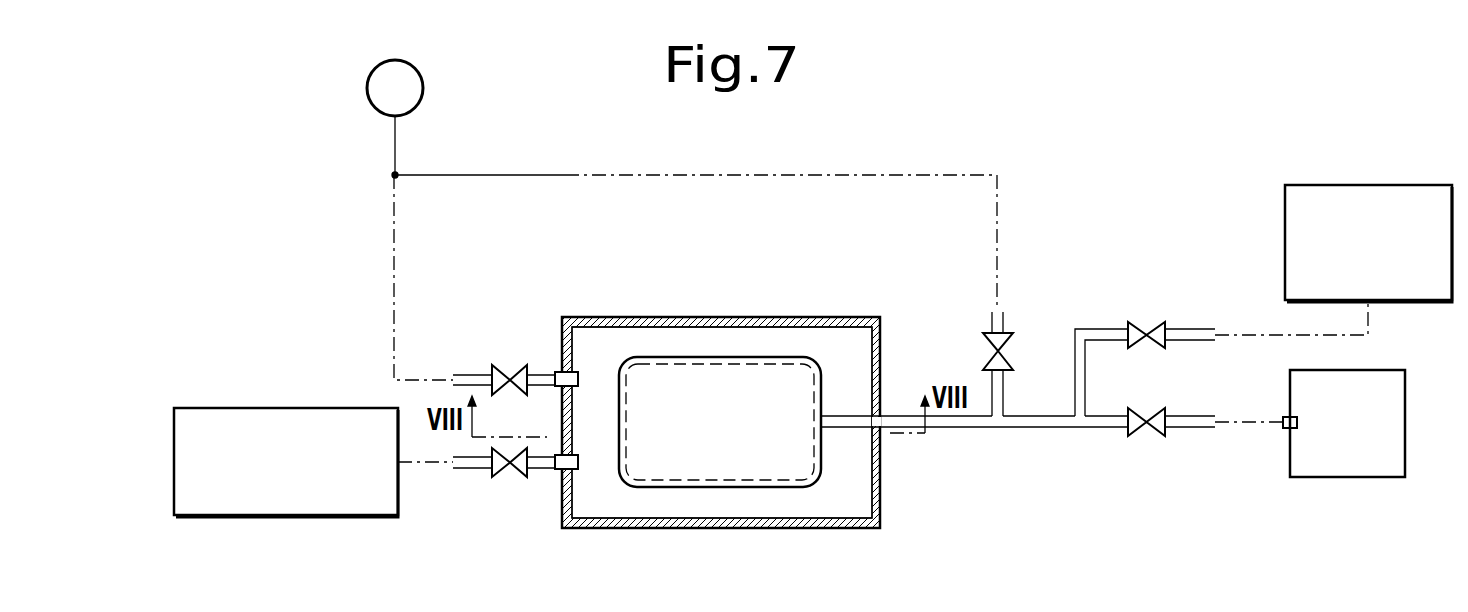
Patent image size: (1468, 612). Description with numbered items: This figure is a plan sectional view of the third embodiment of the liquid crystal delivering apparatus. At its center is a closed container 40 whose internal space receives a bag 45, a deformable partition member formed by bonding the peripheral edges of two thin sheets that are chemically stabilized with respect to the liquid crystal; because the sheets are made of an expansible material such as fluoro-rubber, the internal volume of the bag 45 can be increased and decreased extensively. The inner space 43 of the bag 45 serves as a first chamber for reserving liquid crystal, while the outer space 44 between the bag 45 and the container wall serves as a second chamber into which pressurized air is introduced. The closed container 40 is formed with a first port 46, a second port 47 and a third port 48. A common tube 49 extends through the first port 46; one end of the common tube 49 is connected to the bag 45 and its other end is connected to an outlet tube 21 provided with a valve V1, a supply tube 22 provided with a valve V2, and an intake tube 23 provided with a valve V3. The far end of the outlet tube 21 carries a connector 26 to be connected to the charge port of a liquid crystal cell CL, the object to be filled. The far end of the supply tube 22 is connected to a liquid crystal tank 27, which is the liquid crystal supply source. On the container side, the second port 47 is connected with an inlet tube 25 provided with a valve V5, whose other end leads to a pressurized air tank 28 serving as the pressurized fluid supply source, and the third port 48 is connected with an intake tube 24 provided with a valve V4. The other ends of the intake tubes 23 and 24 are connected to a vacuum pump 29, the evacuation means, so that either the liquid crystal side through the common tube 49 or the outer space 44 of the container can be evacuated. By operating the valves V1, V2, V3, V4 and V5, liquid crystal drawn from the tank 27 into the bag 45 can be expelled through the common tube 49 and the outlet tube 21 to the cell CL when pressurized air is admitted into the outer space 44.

The outlet tube 21 is at (1181, 414).
The supply tube 22 is at (1193, 328).
The intake tube 23 is at (1004, 395).
The intake tube 24 is at (470, 373).
The inlet tube 25 is at (470, 470).
The connector 26 is at (1284, 436).
The liquid crystal tank 27 is at (1350, 185).
The pressurized air tank 28 is at (317, 408).
The vacuum pump 29 is at (423, 95).
The closed container 40 is at (788, 317).
The inner space 43 is at (725, 400).
The outer space 44 is at (755, 495).
The bag 45 is at (670, 385).
The first port 46 is at (882, 428).
The second port 47 is at (556, 470).
The third port 48 is at (556, 378).
The common tube 49 is at (842, 412).
The valve V1 is at (1136, 409).
The valve V2 is at (1132, 322).
The valve V3 is at (986, 338).
The valve V4 is at (496, 368).
The valve V5 is at (500, 478).
The liquid crystal cell CL is at (1333, 478).